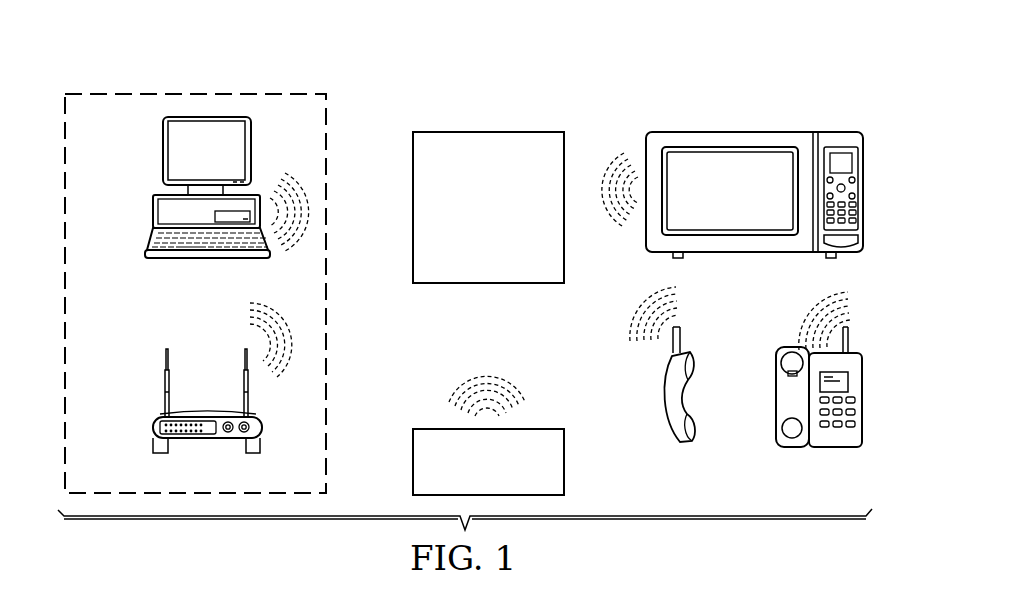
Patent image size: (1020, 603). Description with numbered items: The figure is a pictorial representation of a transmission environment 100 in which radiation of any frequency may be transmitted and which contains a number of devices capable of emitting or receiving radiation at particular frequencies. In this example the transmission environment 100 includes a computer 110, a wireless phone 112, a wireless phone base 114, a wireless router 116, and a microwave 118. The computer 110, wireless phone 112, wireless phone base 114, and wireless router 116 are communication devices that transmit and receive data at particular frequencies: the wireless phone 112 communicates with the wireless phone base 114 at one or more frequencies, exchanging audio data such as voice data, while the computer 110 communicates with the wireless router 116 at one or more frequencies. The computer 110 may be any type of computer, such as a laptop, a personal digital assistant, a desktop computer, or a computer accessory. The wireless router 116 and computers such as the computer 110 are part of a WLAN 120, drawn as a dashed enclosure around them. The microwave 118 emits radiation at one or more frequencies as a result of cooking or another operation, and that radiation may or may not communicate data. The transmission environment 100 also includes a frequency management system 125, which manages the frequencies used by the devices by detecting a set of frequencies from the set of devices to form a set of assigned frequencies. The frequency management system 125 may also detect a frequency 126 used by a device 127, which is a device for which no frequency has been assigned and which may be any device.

The transmission environment 100 is at (663, 57).
The computer 110 is at (153, 212).
The wireless phone 112 is at (685, 400).
The wireless phone base 114 is at (830, 447).
The wireless router 116 is at (153, 437).
The microwave 118 is at (753, 132).
The WLAN 120 is at (168, 93).
The frequency management system 125 is at (488, 132).
The frequency 126 is at (460, 398).
The device 127 is at (413, 462).